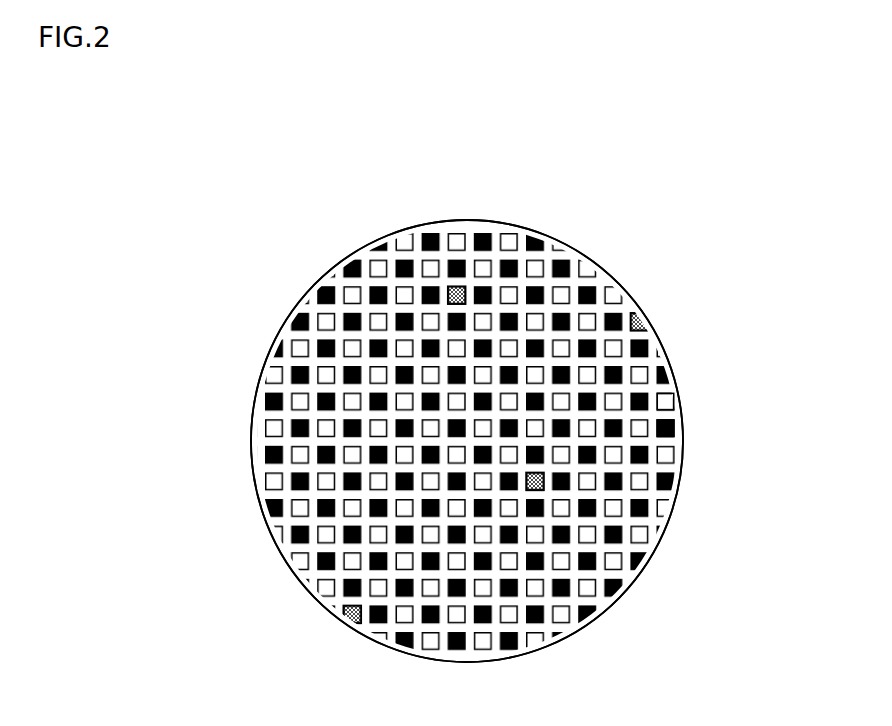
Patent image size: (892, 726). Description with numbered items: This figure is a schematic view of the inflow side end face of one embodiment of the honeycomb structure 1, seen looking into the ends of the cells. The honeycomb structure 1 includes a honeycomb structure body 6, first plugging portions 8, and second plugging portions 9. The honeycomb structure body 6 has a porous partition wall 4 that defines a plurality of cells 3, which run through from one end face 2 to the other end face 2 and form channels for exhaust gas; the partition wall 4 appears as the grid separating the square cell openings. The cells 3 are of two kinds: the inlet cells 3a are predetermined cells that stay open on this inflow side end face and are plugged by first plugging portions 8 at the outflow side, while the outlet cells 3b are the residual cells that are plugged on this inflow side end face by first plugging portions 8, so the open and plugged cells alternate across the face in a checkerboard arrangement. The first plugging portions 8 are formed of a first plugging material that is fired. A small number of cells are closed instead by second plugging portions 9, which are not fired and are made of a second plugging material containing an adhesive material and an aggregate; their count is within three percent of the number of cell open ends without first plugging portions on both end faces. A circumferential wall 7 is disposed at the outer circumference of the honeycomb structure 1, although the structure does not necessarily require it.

The honeycomb structure 1 is at (467, 409).
The end face 2 is at (607, 280).
The cells 3 is at (582, 209).
The inlet cell 3a is at (672, 402).
The outlet cell 3b is at (673, 430).
The partition wall 4 is at (656, 369).
The honeycomb structure body 6 is at (288, 542).
The circumferential wall 7 is at (652, 543).
The first plugging portions 8 is at (666, 428).
The second plugging portions 9 is at (647, 323).